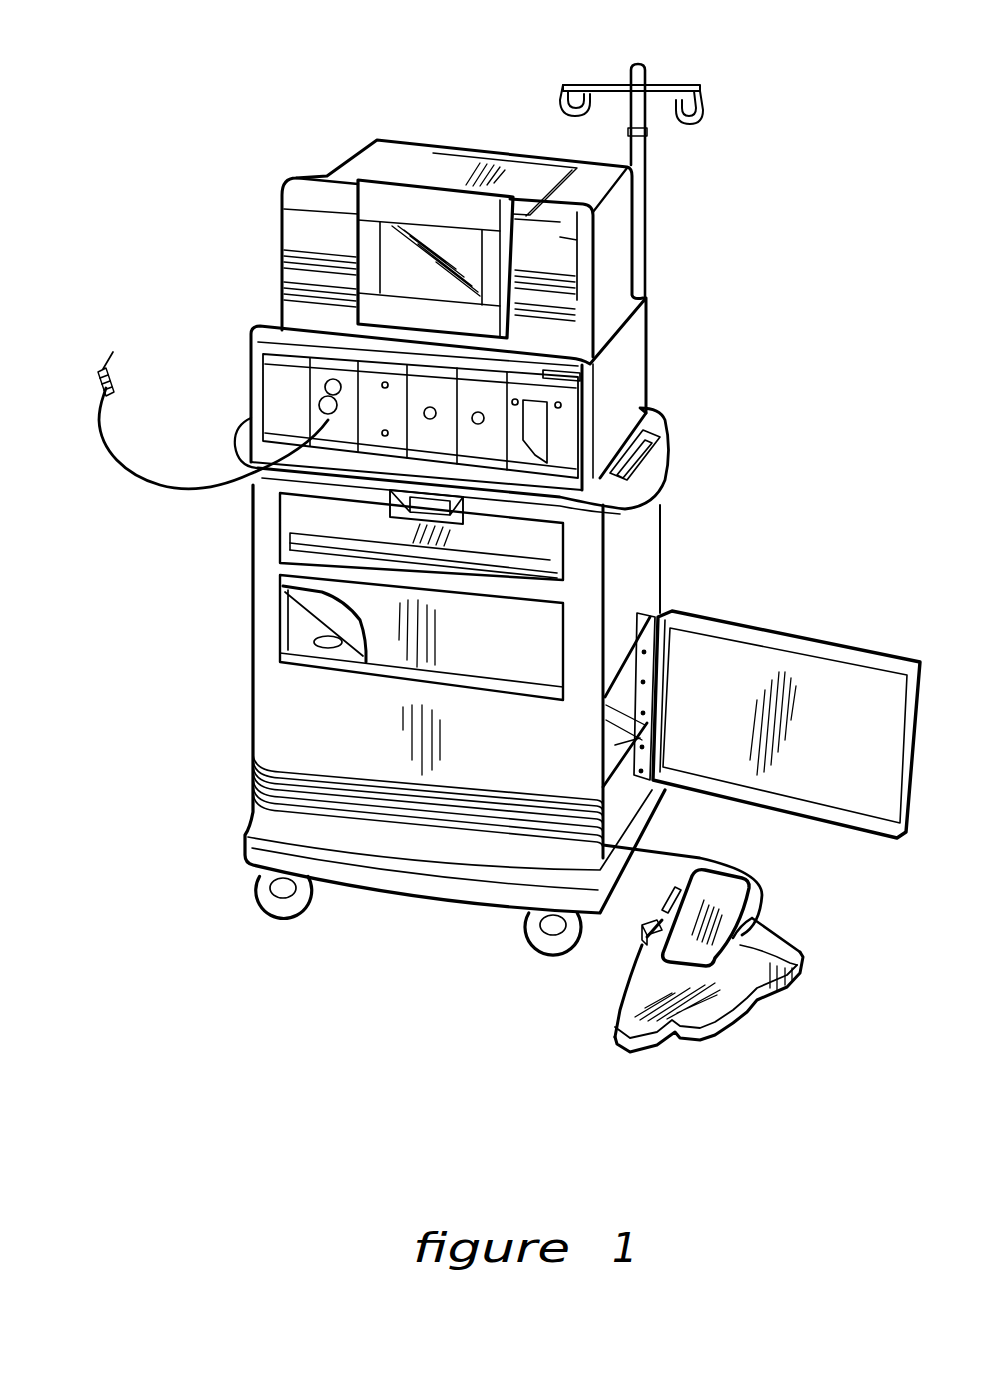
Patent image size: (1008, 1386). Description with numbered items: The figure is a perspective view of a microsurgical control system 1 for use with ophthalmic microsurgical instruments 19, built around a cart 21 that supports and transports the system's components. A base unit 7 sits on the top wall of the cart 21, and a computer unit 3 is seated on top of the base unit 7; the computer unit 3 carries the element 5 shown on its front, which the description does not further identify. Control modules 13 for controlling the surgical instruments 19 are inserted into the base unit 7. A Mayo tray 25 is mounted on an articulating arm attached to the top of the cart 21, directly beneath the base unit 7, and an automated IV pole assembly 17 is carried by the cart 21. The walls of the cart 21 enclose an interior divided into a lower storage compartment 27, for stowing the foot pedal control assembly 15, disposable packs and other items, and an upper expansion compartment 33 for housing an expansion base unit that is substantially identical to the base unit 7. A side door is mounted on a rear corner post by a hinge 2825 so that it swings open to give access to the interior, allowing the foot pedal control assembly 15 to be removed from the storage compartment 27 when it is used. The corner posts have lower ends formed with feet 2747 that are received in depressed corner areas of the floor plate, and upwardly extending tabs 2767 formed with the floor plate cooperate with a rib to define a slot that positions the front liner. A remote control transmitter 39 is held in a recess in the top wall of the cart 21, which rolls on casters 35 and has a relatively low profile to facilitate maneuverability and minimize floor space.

The microsurgical control system 1 is at (697, 283).
The computer unit 3 is at (503, 150).
The display screen 5 is at (357, 233).
The base unit 7 is at (652, 349).
The control modules 13 is at (258, 393).
The foot pedal control assembly 15 is at (808, 940).
The automated IV pole assembly 17 is at (643, 194).
The surgical instruments 19 is at (120, 413).
The cart 21 is at (675, 485).
The Mayo tray 25 is at (330, 503).
The storage compartment 27 is at (652, 704).
The expansion compartment 33 is at (300, 632).
The casters 35 is at (303, 915).
The remote control transmitter 39 is at (417, 517).
The feet 2747 is at (412, 567).
The tabs 2767 is at (650, 750).
The hinge 2825 is at (653, 652).